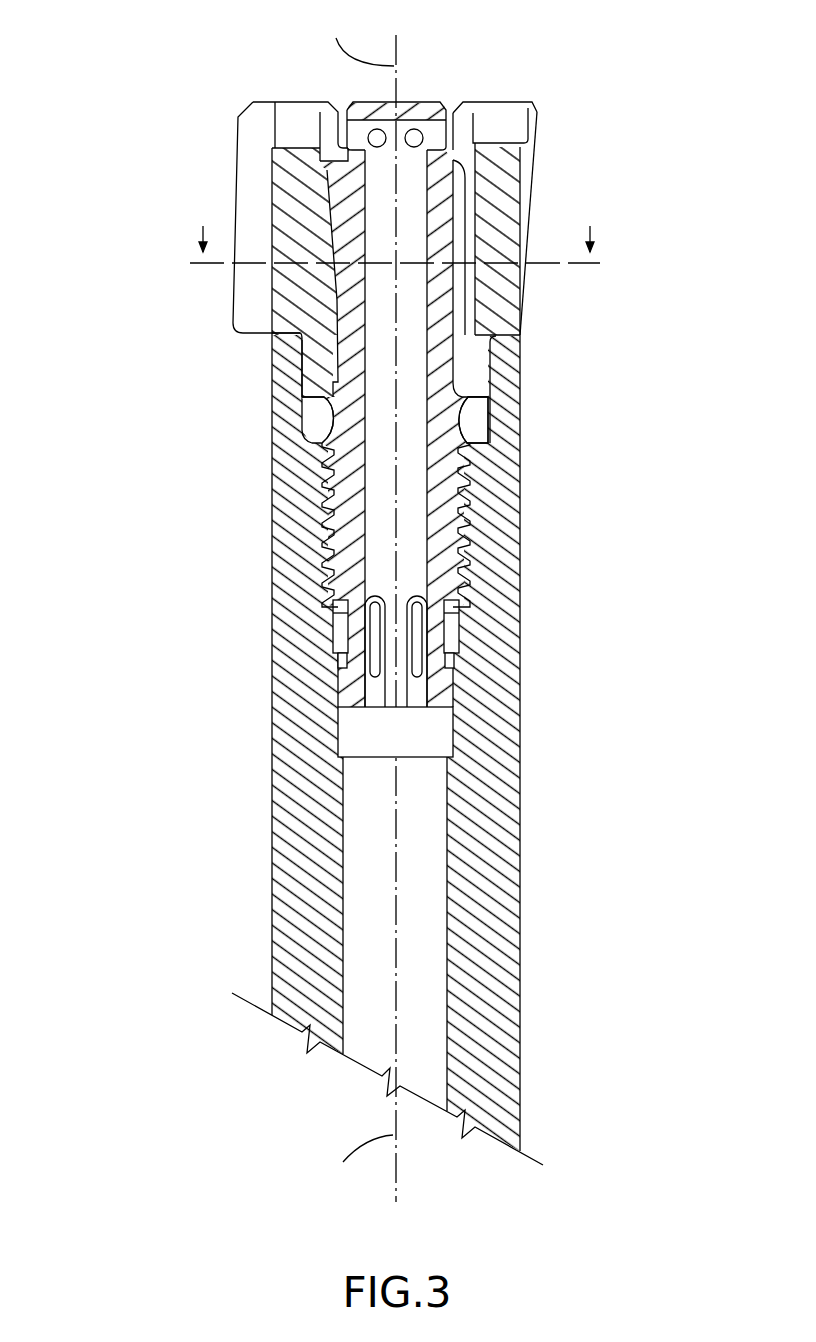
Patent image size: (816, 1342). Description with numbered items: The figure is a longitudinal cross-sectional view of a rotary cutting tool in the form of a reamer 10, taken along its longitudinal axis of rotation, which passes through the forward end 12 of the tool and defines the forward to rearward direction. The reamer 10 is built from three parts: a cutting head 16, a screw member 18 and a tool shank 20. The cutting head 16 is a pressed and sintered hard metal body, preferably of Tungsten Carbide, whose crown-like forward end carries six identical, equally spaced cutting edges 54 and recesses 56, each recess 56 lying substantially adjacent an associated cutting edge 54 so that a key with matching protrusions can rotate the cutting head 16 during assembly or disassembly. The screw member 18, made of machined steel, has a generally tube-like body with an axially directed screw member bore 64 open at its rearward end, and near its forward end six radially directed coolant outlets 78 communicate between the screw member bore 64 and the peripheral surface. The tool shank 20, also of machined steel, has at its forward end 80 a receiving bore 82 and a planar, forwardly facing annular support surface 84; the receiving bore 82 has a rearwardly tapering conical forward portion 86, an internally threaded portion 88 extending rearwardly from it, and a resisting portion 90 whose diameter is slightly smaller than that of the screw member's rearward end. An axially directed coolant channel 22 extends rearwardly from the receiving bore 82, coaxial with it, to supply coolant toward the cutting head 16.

The reamer 10 is at (148, 50).
The forward end 12 is at (570, 115).
The cutting head 16 is at (524, 182).
The screw member 18 is at (438, 100).
The tool shank 20 is at (528, 875).
The coolant channel 22 is at (440, 965).
The cutting edges 54 is at (247, 108).
The recesses 56 is at (504, 114).
The screw member bore 64 is at (424, 535).
The coolant outlets 78 is at (346, 140).
The forward end of the tool shank 80 is at (208, 334).
The receiving bore 82 is at (475, 420).
The annular support surface 84 is at (272, 333).
The conical forward portion 86 is at (312, 373).
The internally threaded portion 88 is at (320, 528).
The resisting portion 90 is at (340, 742).